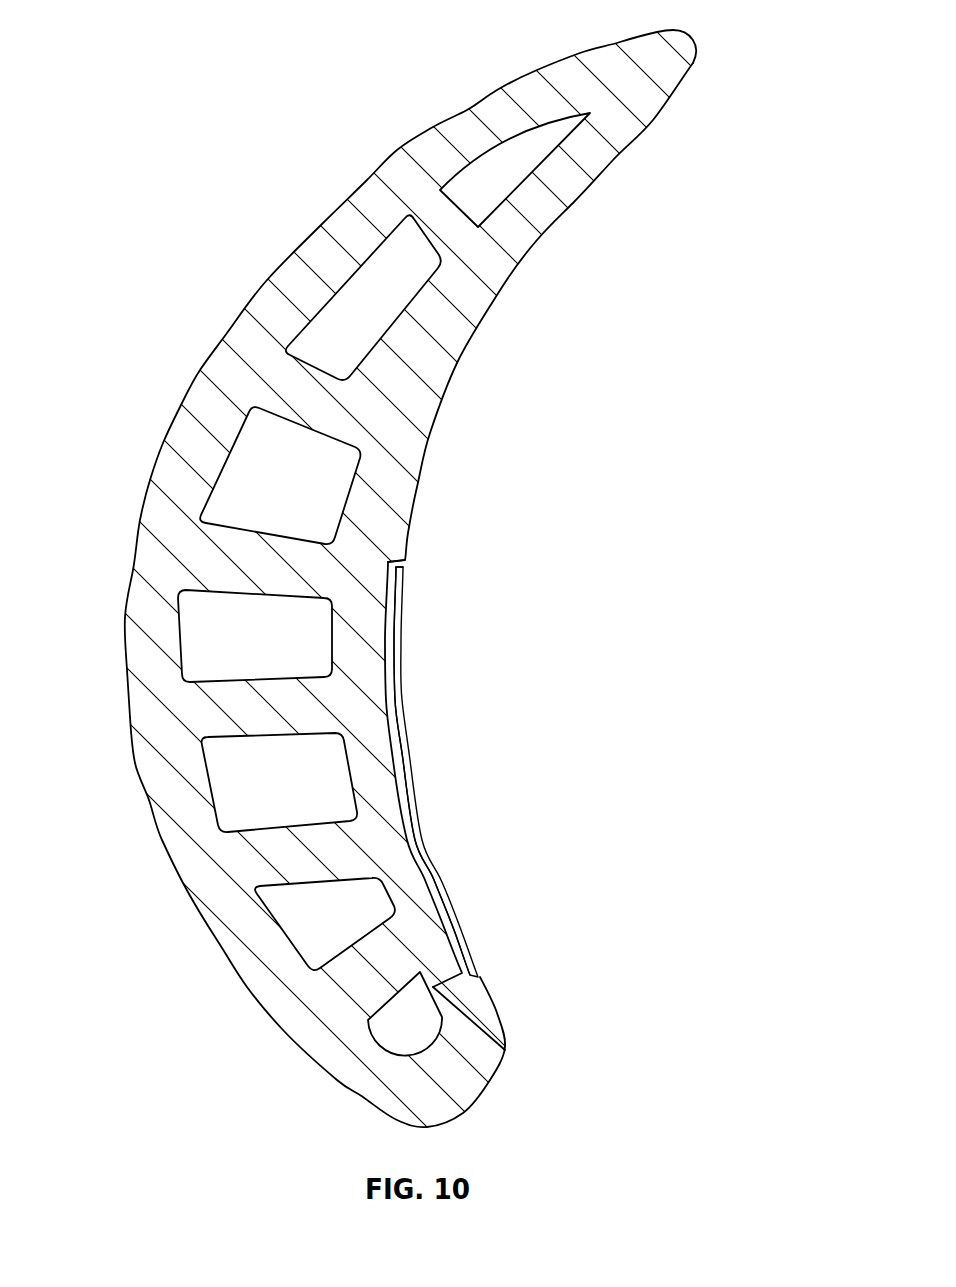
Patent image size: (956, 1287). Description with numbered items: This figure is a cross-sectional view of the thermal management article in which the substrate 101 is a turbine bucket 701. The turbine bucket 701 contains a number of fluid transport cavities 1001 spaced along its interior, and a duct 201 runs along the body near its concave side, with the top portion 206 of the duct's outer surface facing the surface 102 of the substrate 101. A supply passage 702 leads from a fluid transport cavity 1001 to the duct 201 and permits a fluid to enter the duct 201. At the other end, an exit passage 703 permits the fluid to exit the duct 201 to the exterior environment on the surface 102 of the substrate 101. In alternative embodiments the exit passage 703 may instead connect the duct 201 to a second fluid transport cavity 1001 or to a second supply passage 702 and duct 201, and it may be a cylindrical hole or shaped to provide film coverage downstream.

The substrate 101 is at (383, 422).
The surface 102 is at (407, 535).
The duct 201 is at (403, 783).
The top portion 206 is at (405, 692).
The turbine bucket 701 is at (137, 897).
The supply passage 702 is at (497, 1013).
The exit passage 703 is at (402, 567).
The fluid transport cavity 1001 is at (513, 204).